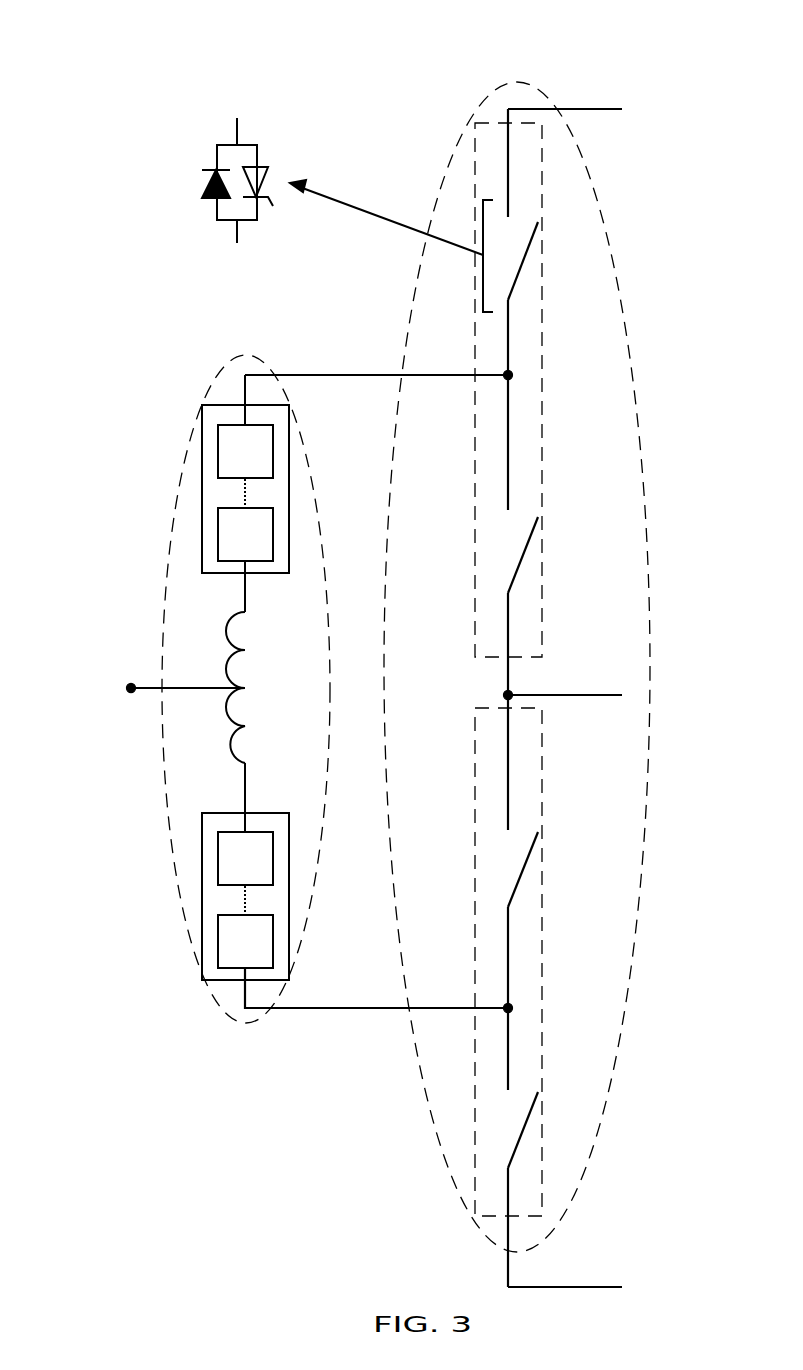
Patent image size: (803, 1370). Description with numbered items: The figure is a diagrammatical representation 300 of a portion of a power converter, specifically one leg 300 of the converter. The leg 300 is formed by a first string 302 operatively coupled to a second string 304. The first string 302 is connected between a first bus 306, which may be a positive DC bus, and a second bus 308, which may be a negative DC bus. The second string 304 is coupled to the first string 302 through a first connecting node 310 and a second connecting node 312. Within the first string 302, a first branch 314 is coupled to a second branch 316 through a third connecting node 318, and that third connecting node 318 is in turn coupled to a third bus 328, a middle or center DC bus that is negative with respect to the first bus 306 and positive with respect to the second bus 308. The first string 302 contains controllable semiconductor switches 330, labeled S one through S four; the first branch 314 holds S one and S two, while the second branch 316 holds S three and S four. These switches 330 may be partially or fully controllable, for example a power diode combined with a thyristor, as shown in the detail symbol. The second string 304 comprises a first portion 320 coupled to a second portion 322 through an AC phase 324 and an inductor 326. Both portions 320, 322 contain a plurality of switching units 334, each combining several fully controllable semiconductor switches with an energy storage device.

The leg of the power converter 300 is at (205, 45).
The first string 302 is at (622, 283).
The second string 304 is at (172, 505).
The first bus 306 is at (606, 109).
The second bus 308 is at (591, 1287).
The first connecting node 310 is at (512, 376).
The second connecting node 312 is at (512, 1009).
The first branch 314 is at (542, 150).
The second branch 316 is at (542, 1172).
The third connecting node 318 is at (510, 698).
The first portion 320 is at (222, 405).
The second portion 322 is at (202, 862).
The AC phase 324 is at (183, 688).
The inductor 326 is at (228, 745).
The third bus 328 is at (606, 695).
The controllable semiconductor switches 330 is at (262, 118).
The switching unit 334 is at (228, 968).